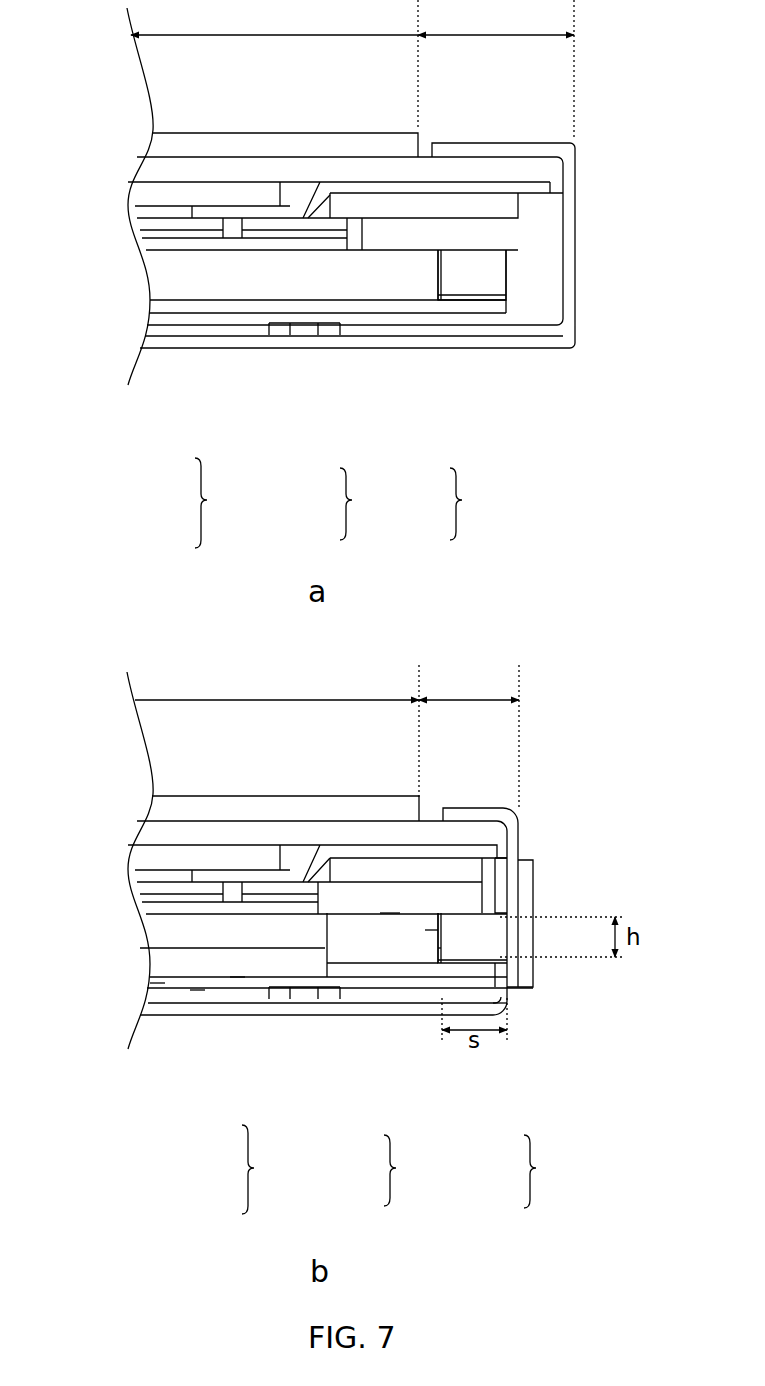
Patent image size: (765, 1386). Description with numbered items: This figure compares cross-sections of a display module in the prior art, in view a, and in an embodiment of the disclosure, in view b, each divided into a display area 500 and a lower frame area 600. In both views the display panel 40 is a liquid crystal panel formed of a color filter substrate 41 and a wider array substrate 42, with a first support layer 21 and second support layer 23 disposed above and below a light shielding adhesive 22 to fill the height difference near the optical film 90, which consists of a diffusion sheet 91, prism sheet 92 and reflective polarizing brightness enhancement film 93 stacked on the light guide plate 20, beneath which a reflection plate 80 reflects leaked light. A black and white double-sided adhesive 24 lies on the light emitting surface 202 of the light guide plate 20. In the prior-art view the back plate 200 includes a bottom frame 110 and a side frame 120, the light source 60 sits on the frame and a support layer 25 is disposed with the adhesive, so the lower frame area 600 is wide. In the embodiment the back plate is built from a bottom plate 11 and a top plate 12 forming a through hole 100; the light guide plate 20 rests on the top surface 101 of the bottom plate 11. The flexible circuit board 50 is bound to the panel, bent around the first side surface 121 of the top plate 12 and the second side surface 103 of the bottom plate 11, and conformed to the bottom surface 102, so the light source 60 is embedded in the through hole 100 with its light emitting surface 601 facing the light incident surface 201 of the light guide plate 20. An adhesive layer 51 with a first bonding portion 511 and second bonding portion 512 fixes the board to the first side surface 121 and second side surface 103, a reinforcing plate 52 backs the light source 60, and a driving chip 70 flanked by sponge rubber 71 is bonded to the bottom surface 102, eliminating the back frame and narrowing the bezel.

The display area 500 is at (275, 400).
The lower frame area 600 is at (496, 405).
The color filter substrate 41 is at (167, 815).
The array substrate 42 is at (211, 836).
The display panel 40 is at (368, 834).
The second support layer 23 is at (258, 861).
The first support layer 21 is at (292, 894).
The light shielding adhesive 22 is at (347, 879).
The support layer 25 is at (442, 212).
The black and white double-sided adhesive 24 is at (457, 900).
The top plate 12 is at (427, 858).
The flexible circuit board 50 is at (560, 778).
The diffusion sheet 91 is at (143, 907).
The prism sheet 92 is at (140, 898).
The reflective polarizing brightness enhancement film 93 is at (145, 888).
The optical film 90 is at (225, 833).
The light guide plate 20 is at (162, 938).
The reflection plate 80 is at (163, 982).
The through hole 100 is at (163, 970).
The bottom frame 110 is at (178, 322).
The side frame 120 is at (542, 265).
The back plate 200 is at (456, 501).
The sponge rubber 71 is at (328, 1058).
The driving chip 70 is at (300, 1058).
The light source 60 is at (470, 920).
The first side surface 121 is at (527, 860).
The first bonding portion 511 is at (502, 884).
The second bonding portion 512 is at (507, 973).
The adhesive layer 51 is at (526, 1167).
The reinforcing plate 52 is at (523, 903).
The light emitting surface 601 is at (442, 948).
The bottom plate 11 is at (160, 985).
The bottom surface 102 is at (198, 992).
The top surface 101 is at (238, 979).
The light emitting surface 202 is at (393, 915).
The light incident surface 201 is at (437, 932).
The second side surface 103 is at (512, 1002).